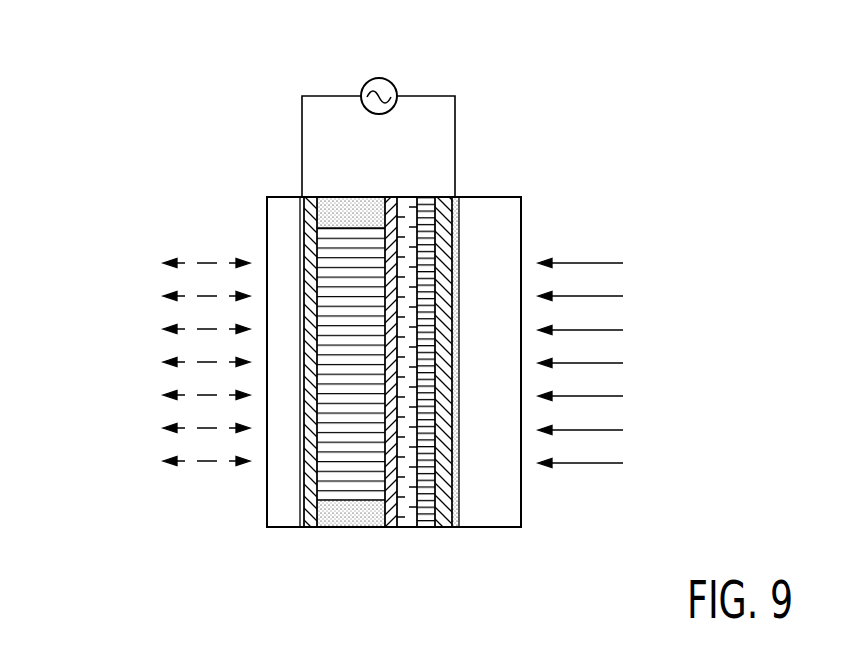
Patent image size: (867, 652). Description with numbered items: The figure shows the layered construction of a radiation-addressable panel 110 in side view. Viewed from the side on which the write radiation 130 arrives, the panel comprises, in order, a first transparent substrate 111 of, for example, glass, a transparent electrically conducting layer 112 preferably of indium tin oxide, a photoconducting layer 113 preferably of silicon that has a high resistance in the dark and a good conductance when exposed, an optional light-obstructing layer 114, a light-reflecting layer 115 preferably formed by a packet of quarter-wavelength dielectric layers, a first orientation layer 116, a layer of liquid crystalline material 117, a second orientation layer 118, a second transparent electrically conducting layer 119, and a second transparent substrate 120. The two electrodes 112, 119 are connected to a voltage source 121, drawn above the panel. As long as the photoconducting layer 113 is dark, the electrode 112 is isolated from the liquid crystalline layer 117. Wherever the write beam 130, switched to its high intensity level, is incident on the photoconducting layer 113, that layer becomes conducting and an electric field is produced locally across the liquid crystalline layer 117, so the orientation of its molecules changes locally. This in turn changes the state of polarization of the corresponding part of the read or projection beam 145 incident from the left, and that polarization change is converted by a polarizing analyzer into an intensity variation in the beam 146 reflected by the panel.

The radiation-addressable panel 110 is at (110, 160).
The first transparent substrate 111 is at (513, 502).
The transparent electrically conducting layer 112 is at (466, 219).
The photoconducting layer 113 is at (448, 531).
The light-obstructing layer 114 is at (431, 529).
The light-reflecting layer 115 is at (408, 529).
The first orientation layer 116 is at (394, 192).
The layer of liquid crystalline material 117 is at (350, 503).
The second orientation layer 118 is at (313, 192).
The second transparent electrically conducting layer 119 is at (299, 505).
The second transparent substrate 120 is at (266, 218).
The voltage source 121 is at (381, 78).
The write radiation 130 is at (604, 363).
The read or projection beam 145 is at (181, 362).
The reflected beam 146 is at (181, 362).